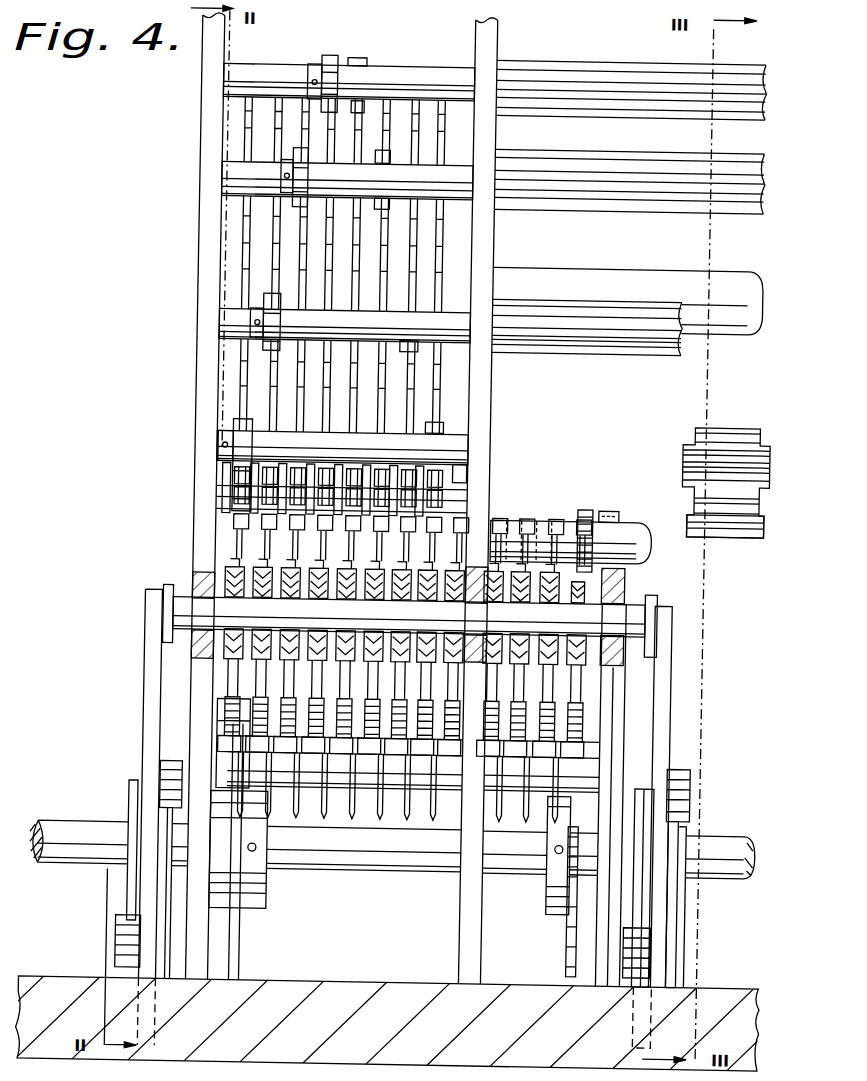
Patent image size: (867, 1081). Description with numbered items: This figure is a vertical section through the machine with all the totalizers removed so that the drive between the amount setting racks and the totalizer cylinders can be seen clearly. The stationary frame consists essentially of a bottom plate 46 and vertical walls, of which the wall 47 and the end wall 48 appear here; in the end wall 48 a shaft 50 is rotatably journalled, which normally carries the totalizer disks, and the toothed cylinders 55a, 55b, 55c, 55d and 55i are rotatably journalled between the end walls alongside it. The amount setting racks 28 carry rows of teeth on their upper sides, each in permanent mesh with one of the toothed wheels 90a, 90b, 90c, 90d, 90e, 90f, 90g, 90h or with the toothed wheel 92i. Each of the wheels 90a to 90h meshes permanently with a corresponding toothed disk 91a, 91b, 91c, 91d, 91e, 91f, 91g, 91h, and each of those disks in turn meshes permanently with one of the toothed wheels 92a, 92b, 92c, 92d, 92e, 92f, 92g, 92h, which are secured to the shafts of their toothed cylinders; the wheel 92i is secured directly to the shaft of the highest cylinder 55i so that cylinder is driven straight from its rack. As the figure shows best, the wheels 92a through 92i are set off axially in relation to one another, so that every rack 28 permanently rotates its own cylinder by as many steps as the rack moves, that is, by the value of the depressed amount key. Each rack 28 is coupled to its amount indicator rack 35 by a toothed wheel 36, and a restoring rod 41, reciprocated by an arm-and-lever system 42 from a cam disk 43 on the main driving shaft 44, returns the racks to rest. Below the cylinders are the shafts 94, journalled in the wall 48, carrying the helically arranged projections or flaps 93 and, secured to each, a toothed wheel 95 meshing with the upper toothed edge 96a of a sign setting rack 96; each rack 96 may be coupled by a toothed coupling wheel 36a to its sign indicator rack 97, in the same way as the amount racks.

The amount setting rack 28 is at (251, 671).
The amount indicator rack 35 is at (246, 661).
The toothed wheel 36 is at (253, 709).
The toothed coupling wheel 36a is at (545, 754).
The restoring rod 41 is at (645, 610).
The arm-and-lever system 42 is at (165, 752).
The cam disk 43 is at (149, 794).
The main driving shaft 44 is at (730, 827).
The bottom plate 46 is at (752, 990).
The vertical wall 47 is at (215, 238).
The vertical wall 48 is at (487, 262).
The shaft 50 is at (750, 308).
The toothed cylinder 55a is at (707, 429).
The toothed cylinder 55b is at (649, 337).
The toothed cylinder 55c is at (683, 191).
The toothed cylinder 55d is at (583, 101).
The toothed cylinder 55i is at (747, 525).
The toothed wheel 90a is at (250, 470).
The toothed wheel 90b is at (270, 486).
The toothed wheel 90c is at (286, 494).
The toothed wheel 90d is at (308, 503).
The toothed wheel 90e is at (363, 507).
The toothed wheel 90f is at (405, 499).
The toothed wheel 90g is at (460, 500).
The toothed wheel 90h is at (458, 496).
The toothed disk 91a is at (246, 97).
The toothed disk 91b is at (281, 94).
The toothed disk 91c is at (305, 60).
The toothed disk 91d is at (341, 114).
The toothed disk 91e is at (361, 92).
The toothed disk 91f is at (391, 93).
The toothed disk 91g is at (419, 92).
The toothed disk 91h is at (446, 92).
The toothed wheel 92a is at (250, 425).
The toothed wheel 92b is at (277, 302).
The toothed wheel 92c is at (286, 198).
The toothed wheel 92d is at (331, 101).
The toothed wheel 92e is at (368, 104).
The toothed wheel 92f is at (392, 200).
The toothed wheel 92g is at (418, 344).
The toothed wheel 92h is at (447, 426).
The toothed wheel 92i is at (472, 468).
The projection or flap 93 is at (621, 503).
The shaft 94 is at (640, 512).
The toothed wheel 95 is at (598, 503).
The sign setting rack 96 is at (640, 582).
The upper toothed edge 96a is at (634, 564).
The sign indicator rack 97 is at (596, 648).